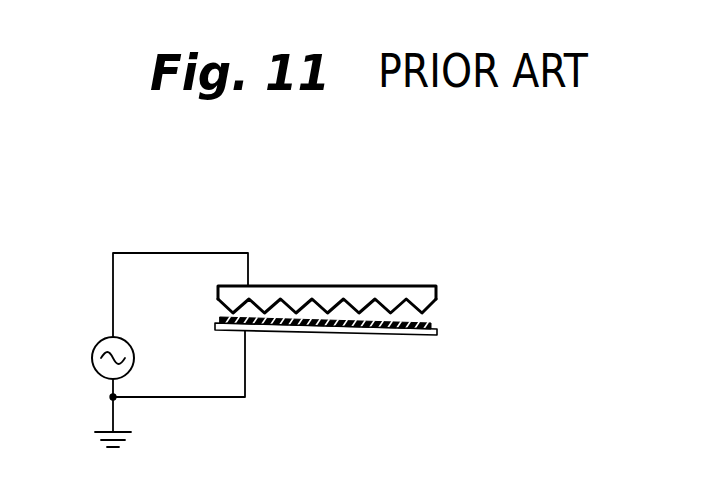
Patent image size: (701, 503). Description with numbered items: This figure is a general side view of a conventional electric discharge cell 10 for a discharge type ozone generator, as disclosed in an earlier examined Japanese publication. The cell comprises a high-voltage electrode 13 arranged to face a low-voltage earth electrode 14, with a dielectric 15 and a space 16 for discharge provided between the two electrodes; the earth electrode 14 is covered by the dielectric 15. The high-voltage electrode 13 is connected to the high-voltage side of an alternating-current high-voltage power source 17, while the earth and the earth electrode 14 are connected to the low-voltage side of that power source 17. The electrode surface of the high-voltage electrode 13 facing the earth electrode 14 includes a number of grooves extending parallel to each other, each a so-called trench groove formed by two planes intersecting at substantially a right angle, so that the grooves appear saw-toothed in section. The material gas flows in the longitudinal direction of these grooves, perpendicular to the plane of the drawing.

The plasma processing apparatus (prior art) 10 is at (198, 240).
The high-voltage electrode 13 is at (297, 298).
The low-voltage earth electrode 14 is at (315, 332).
The dielectric 15 is at (388, 331).
The space for discharge 16 is at (403, 312).
The alternating-current high-voltage power source 17 is at (92, 358).